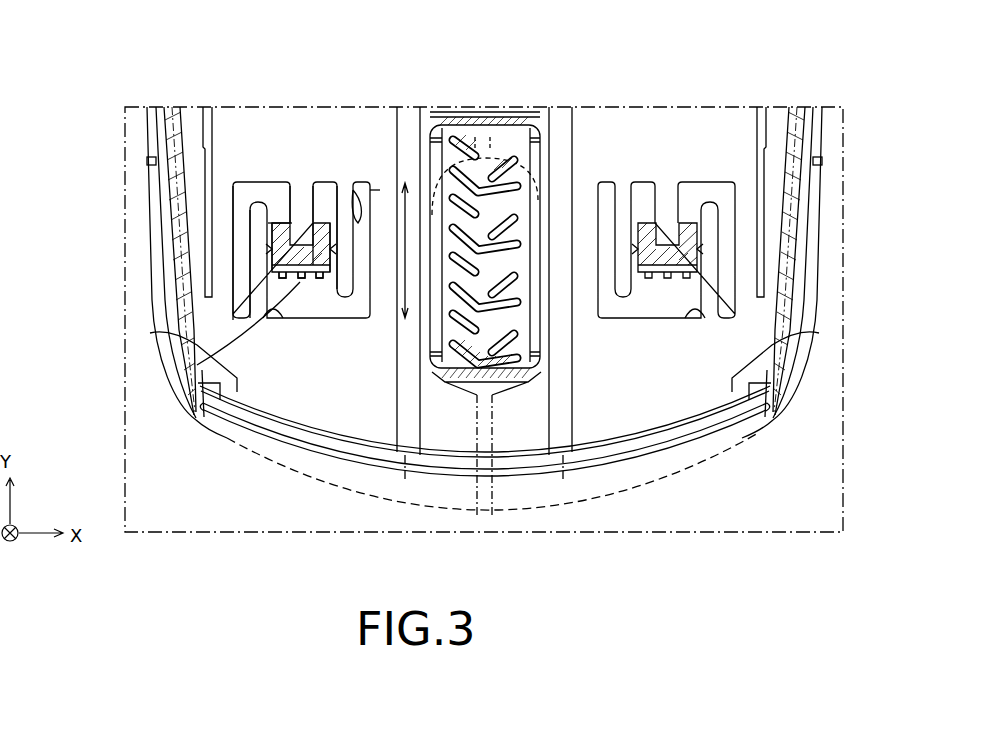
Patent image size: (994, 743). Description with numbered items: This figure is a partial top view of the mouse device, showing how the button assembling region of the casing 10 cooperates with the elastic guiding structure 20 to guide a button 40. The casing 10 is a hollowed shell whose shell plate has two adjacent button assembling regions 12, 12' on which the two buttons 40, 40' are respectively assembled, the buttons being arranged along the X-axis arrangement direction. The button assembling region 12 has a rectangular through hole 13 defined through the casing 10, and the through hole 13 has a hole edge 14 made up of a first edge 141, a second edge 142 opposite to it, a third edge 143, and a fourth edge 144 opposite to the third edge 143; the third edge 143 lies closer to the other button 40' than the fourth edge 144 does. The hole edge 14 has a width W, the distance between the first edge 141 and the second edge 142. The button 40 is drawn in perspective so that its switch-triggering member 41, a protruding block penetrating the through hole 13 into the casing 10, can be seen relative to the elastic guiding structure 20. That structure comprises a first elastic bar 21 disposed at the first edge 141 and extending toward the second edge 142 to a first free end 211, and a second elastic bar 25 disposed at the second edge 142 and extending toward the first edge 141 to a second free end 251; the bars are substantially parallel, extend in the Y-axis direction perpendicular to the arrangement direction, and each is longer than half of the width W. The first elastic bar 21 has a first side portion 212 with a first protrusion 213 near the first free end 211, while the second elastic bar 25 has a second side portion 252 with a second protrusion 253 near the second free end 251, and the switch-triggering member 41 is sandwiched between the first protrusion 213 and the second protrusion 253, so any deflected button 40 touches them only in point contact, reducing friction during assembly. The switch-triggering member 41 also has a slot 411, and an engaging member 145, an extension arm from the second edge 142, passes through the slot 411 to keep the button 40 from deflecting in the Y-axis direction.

The casing 10 is at (147, 199).
The button assembling region 12 is at (301, 188).
The button assembling region 12' is at (666, 187).
The through hole 13 is at (259, 182).
The hole edge 14 is at (361, 316).
The first edge 141 is at (187, 370).
The second edge 142 is at (147, 161).
The third edge 143 is at (373, 186).
The fourth edge 144 is at (272, 223).
The engaging member 145 is at (340, 225).
The elastic guiding structure 20 is at (67, 283).
The first elastic bar 21 is at (180, 325).
The second elastic bar 25 is at (235, 290).
The second free end 251 is at (337, 290).
The second side portion 252 is at (314, 288).
The second protrusion 253 is at (300, 288).
The first free end 211 is at (235, 198).
The first side portion 212 is at (270, 200).
The first protrusion 213 is at (278, 212).
The switch-triggering member 41 is at (330, 240).
The slot 411 is at (329, 235).
The button 40 is at (422, 451).
The button 40' is at (798, 423).
The width W is at (405, 183).